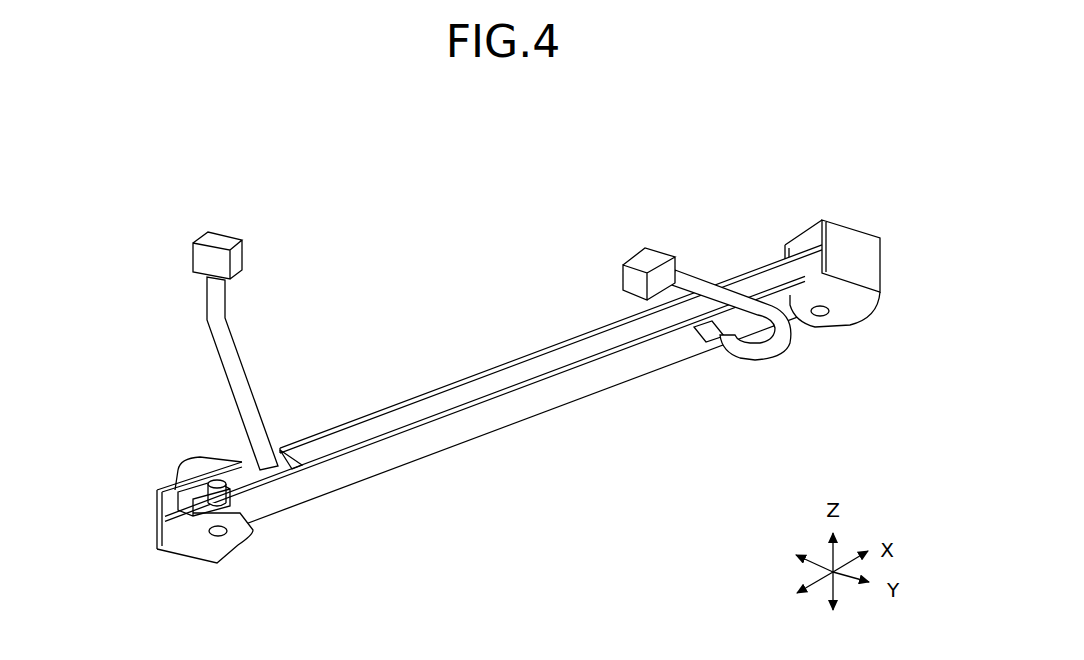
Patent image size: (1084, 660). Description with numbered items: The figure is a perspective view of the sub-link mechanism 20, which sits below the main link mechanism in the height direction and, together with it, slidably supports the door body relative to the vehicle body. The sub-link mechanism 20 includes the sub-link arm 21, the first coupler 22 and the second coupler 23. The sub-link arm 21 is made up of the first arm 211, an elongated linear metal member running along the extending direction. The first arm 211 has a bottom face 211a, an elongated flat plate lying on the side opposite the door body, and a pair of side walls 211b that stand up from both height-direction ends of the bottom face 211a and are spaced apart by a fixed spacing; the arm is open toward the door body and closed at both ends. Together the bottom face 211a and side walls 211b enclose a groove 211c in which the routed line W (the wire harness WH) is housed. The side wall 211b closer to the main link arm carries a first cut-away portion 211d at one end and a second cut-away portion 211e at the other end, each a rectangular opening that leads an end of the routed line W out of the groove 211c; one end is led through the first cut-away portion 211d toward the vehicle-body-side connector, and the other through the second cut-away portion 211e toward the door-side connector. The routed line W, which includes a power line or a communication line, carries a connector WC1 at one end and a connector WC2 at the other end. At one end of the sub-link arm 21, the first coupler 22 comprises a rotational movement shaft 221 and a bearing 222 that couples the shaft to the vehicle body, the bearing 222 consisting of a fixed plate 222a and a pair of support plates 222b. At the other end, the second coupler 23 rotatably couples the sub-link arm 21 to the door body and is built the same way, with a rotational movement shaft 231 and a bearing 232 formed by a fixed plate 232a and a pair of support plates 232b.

The sub-link mechanism 20 is at (452, 285).
The sub-link arm 21 is at (493, 406).
The first arm 211 is at (508, 342).
The bottom face 211a is at (390, 452).
The side walls 211b is at (413, 387).
The groove 211c is at (358, 430).
The first cut-away portion 211d is at (712, 356).
The second cut-away portion 211e is at (290, 472).
The first coupler 22 is at (871, 212).
The rotational movement shaft 221 is at (820, 318).
The bearing 222 is at (849, 281).
The fixed plate 222a is at (852, 253).
The support plates 222b is at (802, 240).
The second coupler 23 is at (134, 485).
The rotational movement shaft 231 is at (217, 490).
The bearing 232 is at (156, 506).
The fixed plate 232a is at (158, 517).
The support plates 232b is at (195, 460).
The routed line W is at (436, 370).
The wire harness WH is at (216, 318).
The connector WC1 is at (657, 262).
The connector WC2 is at (232, 247).